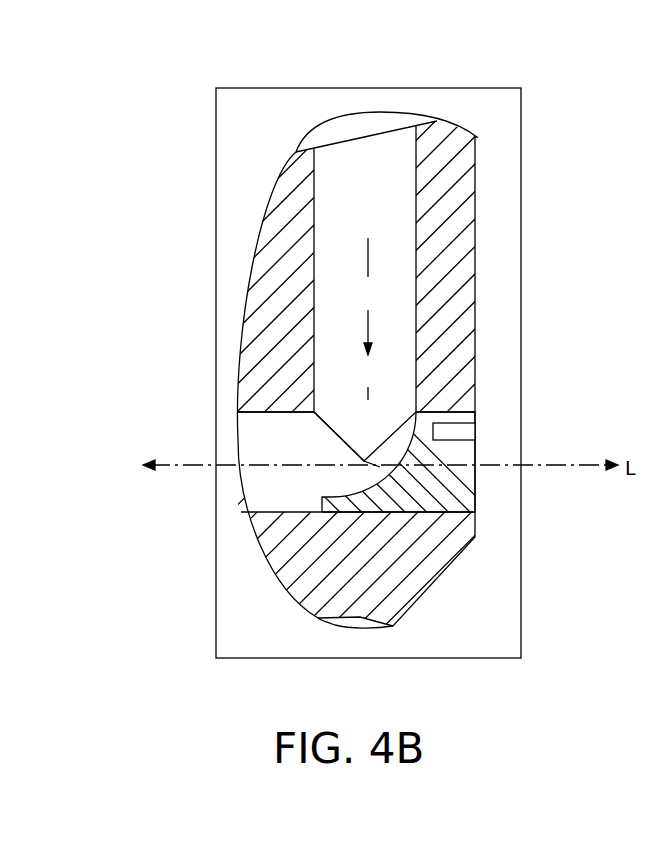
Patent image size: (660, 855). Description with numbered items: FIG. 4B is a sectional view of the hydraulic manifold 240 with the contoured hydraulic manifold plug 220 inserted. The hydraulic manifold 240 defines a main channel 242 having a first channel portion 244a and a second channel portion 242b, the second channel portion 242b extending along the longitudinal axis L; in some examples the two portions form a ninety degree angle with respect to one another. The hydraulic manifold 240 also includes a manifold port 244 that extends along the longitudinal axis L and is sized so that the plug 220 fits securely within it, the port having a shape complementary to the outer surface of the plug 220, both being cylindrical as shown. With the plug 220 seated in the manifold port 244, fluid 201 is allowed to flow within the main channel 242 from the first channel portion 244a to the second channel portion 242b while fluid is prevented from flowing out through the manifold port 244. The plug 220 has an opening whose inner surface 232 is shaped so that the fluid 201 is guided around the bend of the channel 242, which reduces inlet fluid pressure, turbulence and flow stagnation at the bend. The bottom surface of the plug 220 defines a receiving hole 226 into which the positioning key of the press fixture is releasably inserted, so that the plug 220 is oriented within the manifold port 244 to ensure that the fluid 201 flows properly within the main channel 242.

The hydraulic manifold 240 is at (293, 158).
The manifold port 244 is at (364, 253).
The first channel portion 244a is at (368, 168).
The fluid 201 is at (293, 464).
The main channel 242 is at (247, 439).
The second channel portion 242b is at (263, 440).
The inner surface 232 is at (340, 494).
The hydraulic manifold plug 220 is at (430, 476).
The receiving hole 226 is at (463, 431).